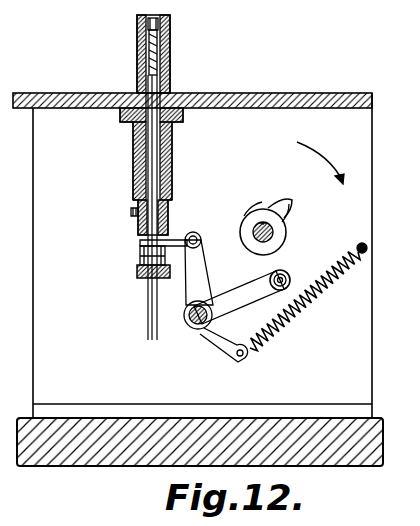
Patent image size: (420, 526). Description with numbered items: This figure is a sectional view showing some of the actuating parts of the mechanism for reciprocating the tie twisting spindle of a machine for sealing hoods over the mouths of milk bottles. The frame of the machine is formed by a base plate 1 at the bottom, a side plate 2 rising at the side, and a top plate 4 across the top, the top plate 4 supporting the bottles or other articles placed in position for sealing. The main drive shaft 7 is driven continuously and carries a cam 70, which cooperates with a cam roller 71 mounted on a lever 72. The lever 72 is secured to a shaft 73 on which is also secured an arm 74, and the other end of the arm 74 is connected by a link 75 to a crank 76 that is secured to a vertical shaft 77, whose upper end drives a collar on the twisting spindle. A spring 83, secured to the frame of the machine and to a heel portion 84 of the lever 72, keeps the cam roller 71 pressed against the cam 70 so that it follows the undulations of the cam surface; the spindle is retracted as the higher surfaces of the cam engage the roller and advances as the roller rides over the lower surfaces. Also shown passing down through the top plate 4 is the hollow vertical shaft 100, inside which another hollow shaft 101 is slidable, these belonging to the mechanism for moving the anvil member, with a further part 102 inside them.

The base plate 1 is at (128, 455).
The side plate 2 is at (45, 328).
The top plate 4 is at (53, 88).
The main drive shaft 7 is at (290, 232).
The cam 70 is at (232, 232).
The cam roller 71 is at (288, 272).
The lever 72 is at (262, 298).
The shaft 73 is at (196, 325).
The arm 74 is at (192, 298).
The link 75 is at (183, 238).
The crank 76 is at (138, 250).
The vertical shaft 77 is at (185, 88).
The spring 83 is at (313, 308).
The heel portion 84 is at (234, 353).
The hollow vertical shaft 100 is at (137, 62).
The hollow shaft 101 is at (160, 50).
The spring 102 is at (156, 68).